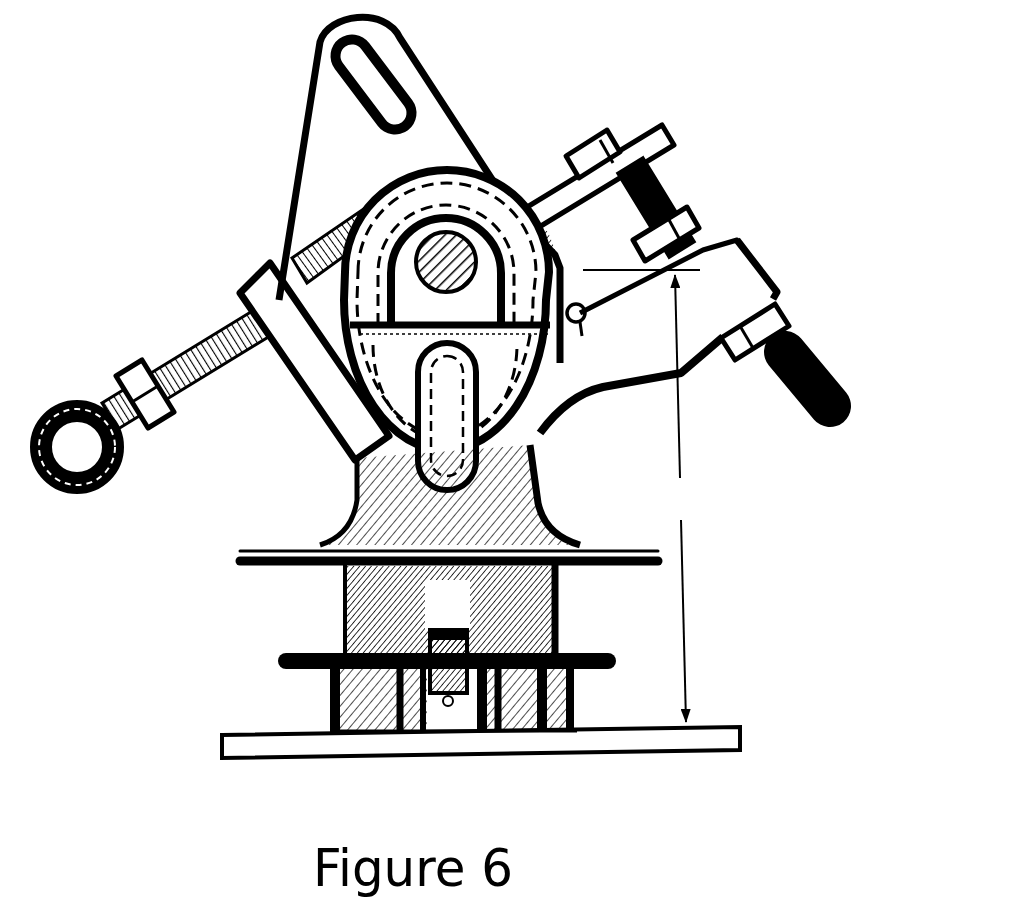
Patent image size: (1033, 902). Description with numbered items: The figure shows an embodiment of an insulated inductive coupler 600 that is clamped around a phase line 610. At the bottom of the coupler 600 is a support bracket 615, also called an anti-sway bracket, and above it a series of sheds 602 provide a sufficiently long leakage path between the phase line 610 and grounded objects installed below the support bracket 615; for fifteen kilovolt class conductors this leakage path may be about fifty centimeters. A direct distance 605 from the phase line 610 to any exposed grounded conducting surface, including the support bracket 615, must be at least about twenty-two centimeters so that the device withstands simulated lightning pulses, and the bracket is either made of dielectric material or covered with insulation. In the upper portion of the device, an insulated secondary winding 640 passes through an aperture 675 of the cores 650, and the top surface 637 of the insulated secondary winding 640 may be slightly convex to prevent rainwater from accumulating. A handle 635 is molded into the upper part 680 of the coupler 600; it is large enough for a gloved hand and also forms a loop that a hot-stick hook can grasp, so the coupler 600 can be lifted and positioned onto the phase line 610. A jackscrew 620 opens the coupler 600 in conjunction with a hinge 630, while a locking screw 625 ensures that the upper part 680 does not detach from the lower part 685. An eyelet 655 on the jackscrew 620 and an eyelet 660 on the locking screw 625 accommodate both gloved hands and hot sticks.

The insulated inductive coupler 600 is at (743, 177).
The sheds 602 is at (307, 650).
The direct distance 605 is at (643, 496).
The phase line 610 is at (415, 252).
The support bracket 615 is at (642, 752).
The jackscrew 620 is at (712, 232).
The locking screw 625 is at (190, 340).
The hinge 630 is at (583, 328).
The handle 635 is at (440, 64).
The top surface 637 is at (438, 322).
The insulated secondary winding 640 is at (432, 458).
The cores 650 is at (490, 180).
The eyelet of jackscrew 655 is at (826, 364).
The eyelet of locking screw 660 is at (80, 500).
The aperture 675 is at (425, 300).
The upper part 680 is at (287, 122).
The lower part 685 is at (742, 572).